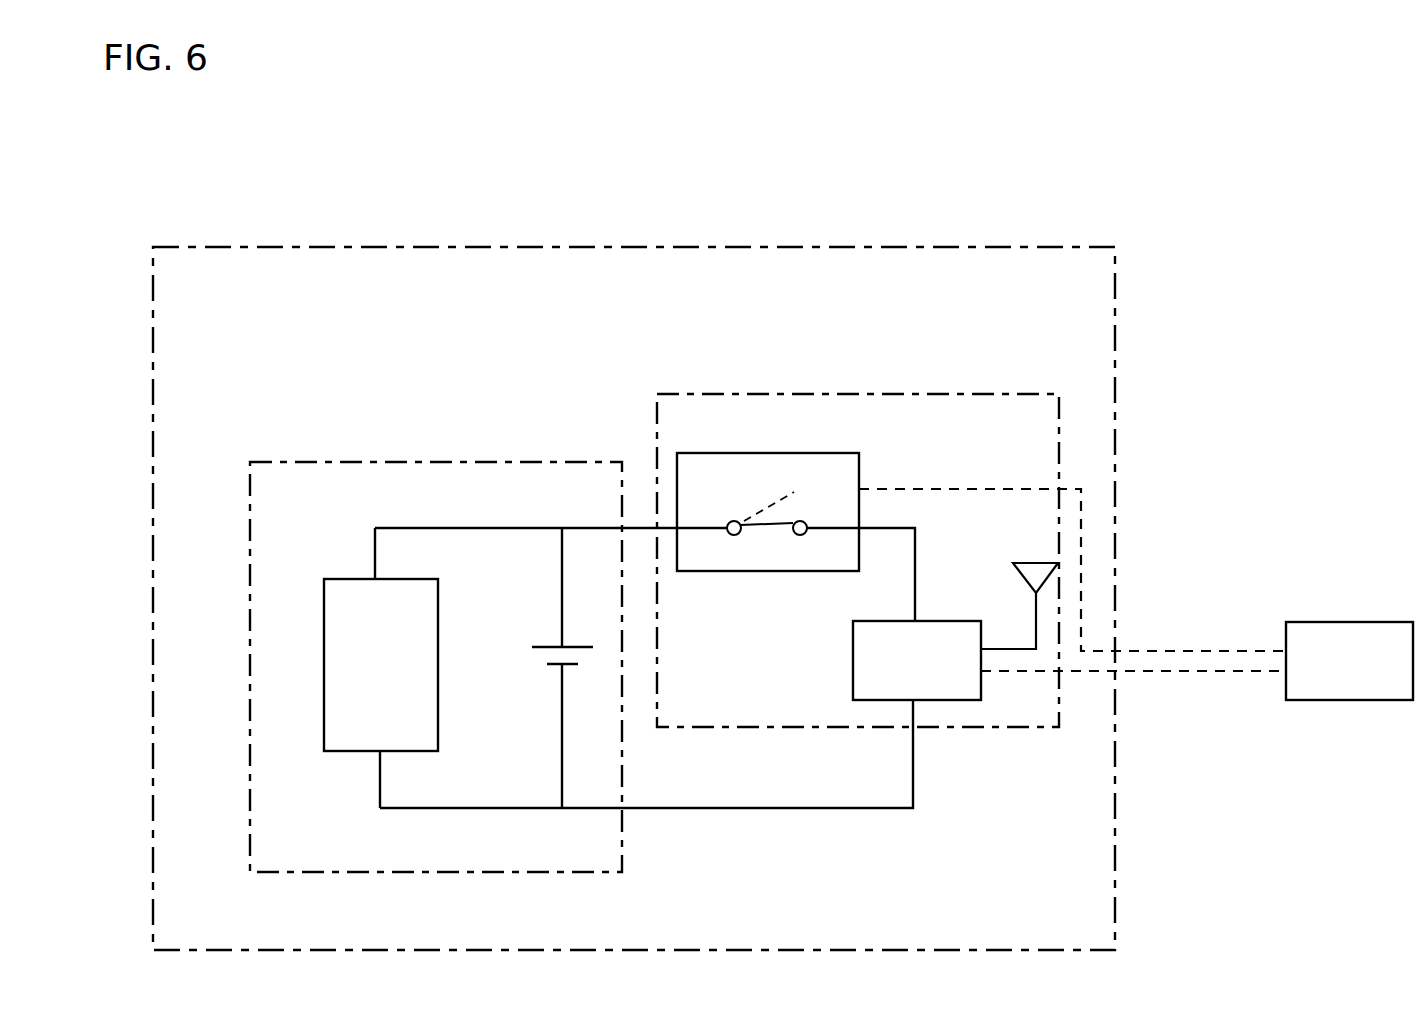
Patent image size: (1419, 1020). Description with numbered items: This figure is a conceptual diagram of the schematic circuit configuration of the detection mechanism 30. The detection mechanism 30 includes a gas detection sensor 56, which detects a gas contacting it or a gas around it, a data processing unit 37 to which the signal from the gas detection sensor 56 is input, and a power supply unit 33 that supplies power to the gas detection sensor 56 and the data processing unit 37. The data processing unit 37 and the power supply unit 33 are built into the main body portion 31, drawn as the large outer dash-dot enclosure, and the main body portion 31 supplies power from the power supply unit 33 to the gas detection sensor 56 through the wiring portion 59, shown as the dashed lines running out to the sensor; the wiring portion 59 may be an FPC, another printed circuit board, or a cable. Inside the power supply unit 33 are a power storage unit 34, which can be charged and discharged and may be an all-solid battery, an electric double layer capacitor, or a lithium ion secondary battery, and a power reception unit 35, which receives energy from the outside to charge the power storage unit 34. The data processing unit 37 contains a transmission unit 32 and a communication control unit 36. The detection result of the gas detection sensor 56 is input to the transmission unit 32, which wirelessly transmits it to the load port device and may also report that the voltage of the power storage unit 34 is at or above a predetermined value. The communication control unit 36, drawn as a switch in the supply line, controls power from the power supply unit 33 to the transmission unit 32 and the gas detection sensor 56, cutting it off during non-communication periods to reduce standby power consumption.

The detection mechanism 30 is at (1257, 388).
The main body portion 31 is at (927, 247).
The transmission unit 32 is at (940, 700).
The power supply unit 33 is at (368, 462).
The power storage unit 34 is at (521, 686).
The power reception unit 35 is at (338, 679).
The communication control unit 36 is at (768, 453).
The data processing unit 37 is at (928, 395).
The gas detection sensor 56 is at (1330, 700).
The wiring portion 59 is at (1164, 650).